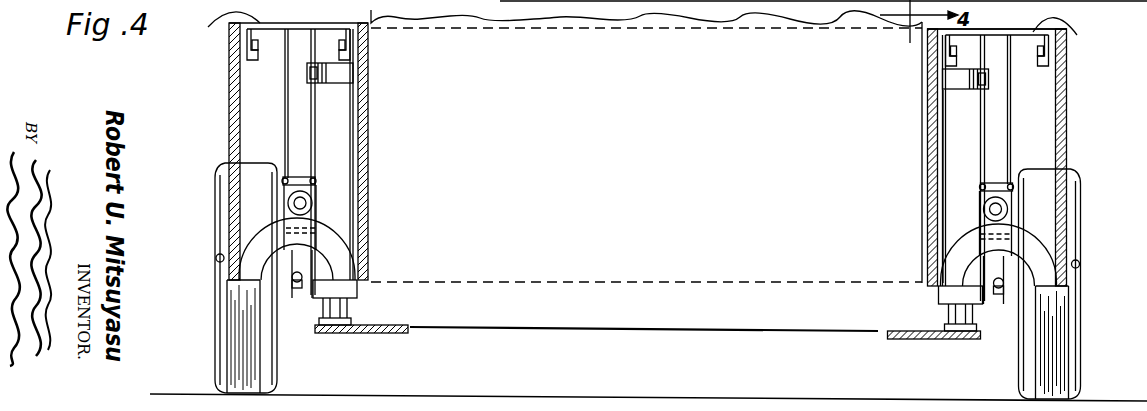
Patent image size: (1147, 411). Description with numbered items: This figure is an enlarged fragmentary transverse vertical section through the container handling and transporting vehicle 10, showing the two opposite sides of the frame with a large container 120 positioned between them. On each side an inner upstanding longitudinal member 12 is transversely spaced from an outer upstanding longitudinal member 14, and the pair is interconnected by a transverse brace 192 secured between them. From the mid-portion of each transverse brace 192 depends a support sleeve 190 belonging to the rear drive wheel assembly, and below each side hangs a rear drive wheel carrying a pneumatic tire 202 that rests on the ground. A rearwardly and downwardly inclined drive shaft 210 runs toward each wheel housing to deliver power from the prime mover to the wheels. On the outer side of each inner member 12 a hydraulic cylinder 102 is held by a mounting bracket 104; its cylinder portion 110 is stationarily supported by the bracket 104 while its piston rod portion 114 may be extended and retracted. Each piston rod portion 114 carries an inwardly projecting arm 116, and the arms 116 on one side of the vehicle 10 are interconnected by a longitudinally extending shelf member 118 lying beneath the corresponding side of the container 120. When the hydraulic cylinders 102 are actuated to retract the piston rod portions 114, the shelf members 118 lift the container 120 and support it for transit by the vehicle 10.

The container handling and transporting vehicle 10 is at (1075, 86).
The inner upstanding longitudinal member 12 is at (366, 166).
The outer upstanding longitudinal member 14 is at (240, 125).
The hydraulic cylinder 102 is at (335, 143).
The mounting bracket 104 is at (350, 82).
The cylinder portion 110 is at (950, 198).
The piston rod portion 114 is at (952, 312).
The inwardly projecting arm 116 is at (360, 333).
The shelf member 118 is at (398, 325).
The large container 120 is at (568, 305).
The support sleeve 190 is at (300, 117).
The transverse brace 192 is at (648, 32).
The pneumatic tire 202 is at (225, 344).
The drive shaft 210 is at (297, 220).